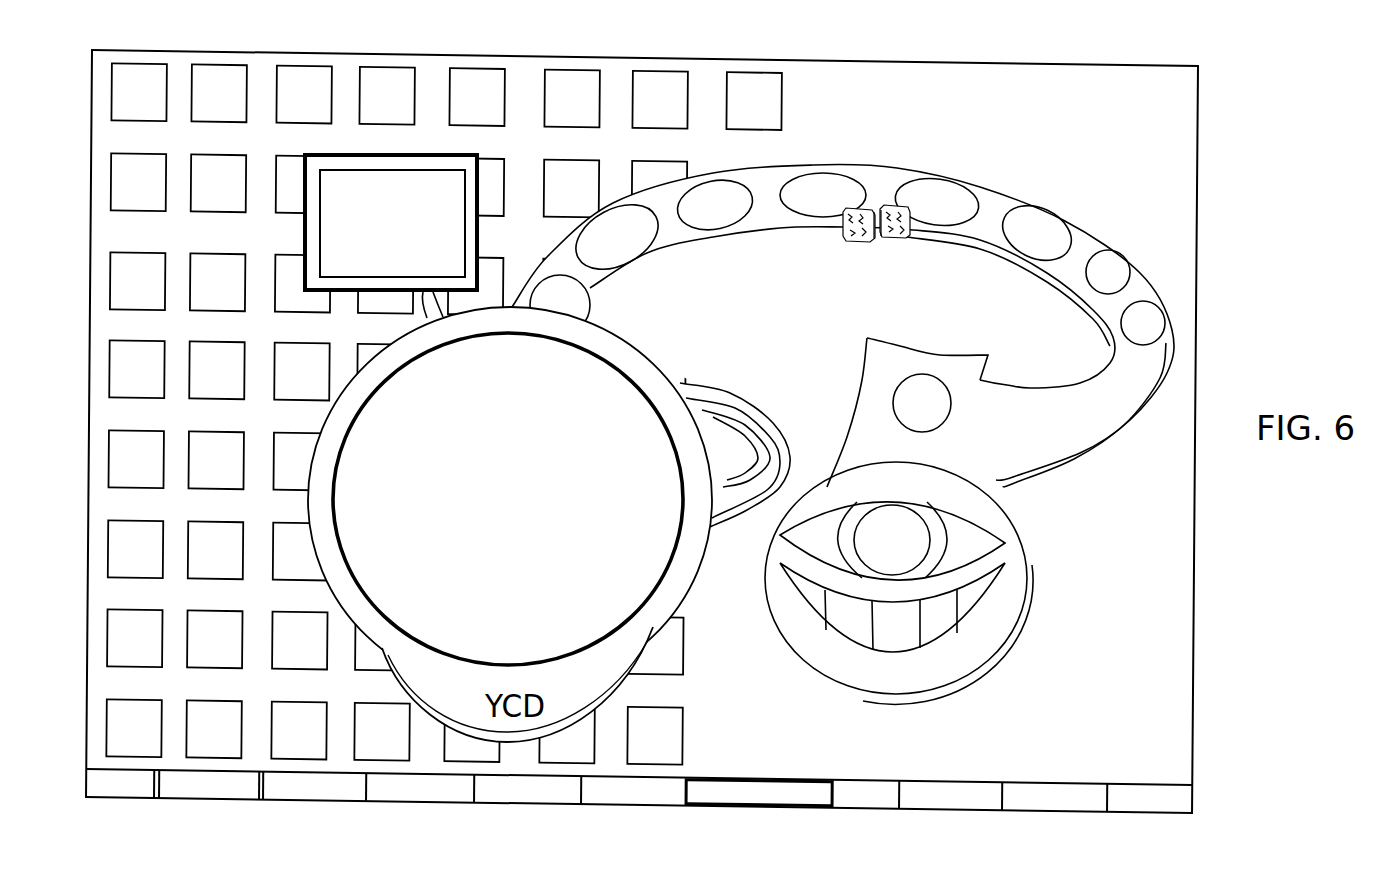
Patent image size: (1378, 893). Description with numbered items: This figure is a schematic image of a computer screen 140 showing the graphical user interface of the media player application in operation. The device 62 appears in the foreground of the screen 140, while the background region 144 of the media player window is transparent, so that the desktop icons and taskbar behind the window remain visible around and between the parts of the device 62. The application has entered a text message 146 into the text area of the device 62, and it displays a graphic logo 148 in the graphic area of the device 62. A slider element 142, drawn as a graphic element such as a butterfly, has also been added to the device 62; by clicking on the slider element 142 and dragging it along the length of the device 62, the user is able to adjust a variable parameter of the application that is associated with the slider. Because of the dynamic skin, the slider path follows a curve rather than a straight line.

The computer screen 140 is at (945, 63).
The slider element 142 is at (885, 234).
The background region 144 is at (1163, 152).
The text message 146 is at (443, 417).
The graphic logo 148 is at (338, 210).
The device 62 is at (900, 633).